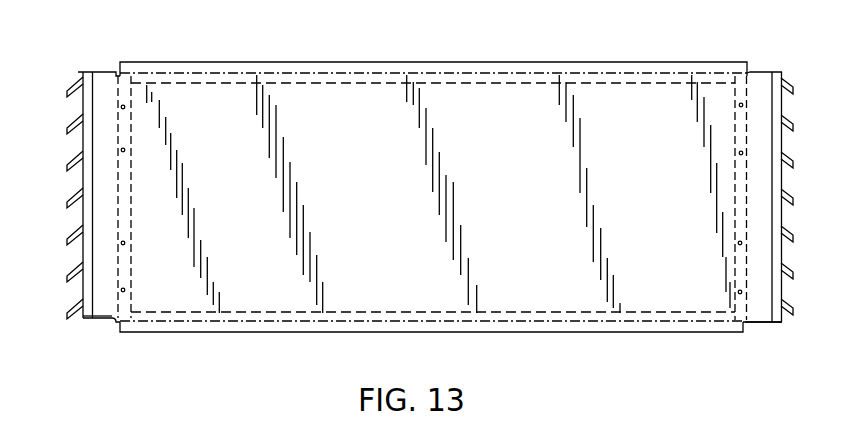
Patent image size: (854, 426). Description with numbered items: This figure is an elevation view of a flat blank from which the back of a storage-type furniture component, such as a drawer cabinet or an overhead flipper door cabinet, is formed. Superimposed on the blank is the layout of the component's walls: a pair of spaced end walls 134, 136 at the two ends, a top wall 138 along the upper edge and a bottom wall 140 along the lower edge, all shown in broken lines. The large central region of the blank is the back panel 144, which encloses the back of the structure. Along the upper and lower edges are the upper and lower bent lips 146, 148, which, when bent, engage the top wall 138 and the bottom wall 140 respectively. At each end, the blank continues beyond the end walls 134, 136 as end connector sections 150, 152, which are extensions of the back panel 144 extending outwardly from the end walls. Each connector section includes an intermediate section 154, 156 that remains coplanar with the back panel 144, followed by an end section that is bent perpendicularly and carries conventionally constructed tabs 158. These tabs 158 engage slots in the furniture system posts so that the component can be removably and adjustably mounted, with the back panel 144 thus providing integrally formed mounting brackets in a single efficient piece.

The end wall 134 is at (122, 291).
The end wall 136 is at (747, 297).
The top wall 138 is at (433, 85).
The bottom wall 140 is at (487, 311).
The back panel 144 is at (390, 237).
The upper bent lip 146 is at (414, 62).
The lower bent lip 148 is at (352, 334).
The end connector section 150 is at (104, 68).
The end connector section 152 is at (766, 70).
The intermediate section 154 is at (97, 323).
The intermediate section 156 is at (768, 323).
The tabs 158 is at (793, 80).